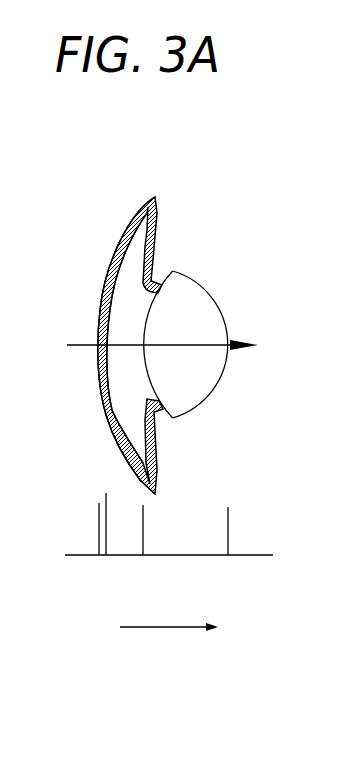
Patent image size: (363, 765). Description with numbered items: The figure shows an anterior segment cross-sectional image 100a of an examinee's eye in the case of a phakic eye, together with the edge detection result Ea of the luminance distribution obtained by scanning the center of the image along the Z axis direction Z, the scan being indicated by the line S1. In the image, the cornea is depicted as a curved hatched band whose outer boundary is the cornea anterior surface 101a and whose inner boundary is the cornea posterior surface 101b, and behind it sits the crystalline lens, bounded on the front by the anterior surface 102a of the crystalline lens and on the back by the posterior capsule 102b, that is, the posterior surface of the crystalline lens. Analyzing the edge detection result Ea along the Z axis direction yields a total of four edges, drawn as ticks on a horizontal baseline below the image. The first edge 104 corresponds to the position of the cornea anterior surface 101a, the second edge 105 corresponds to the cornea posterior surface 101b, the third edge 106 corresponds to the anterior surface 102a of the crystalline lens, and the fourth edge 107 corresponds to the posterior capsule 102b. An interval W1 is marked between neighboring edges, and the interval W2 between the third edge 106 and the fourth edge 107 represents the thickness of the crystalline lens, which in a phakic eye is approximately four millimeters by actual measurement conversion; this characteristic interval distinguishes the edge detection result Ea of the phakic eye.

The anterior segment cross-sectional image 100a is at (177, 198).
The cornea anterior surface 101a is at (120, 247).
The cornea posterior surface 101b is at (110, 278).
The anterior surface of crystalline lens 102a is at (145, 327).
The posterior capsule of crystalline lens 102b is at (224, 324).
The scan line S1 is at (85, 347).
The first edge 104 is at (99, 505).
The second edge 105 is at (106, 493).
The third edge 106 is at (143, 523).
The fourth edge 107 is at (228, 530).
The interval W1 is at (125, 557).
The interval between third edge and fourth edge W2 is at (228, 557).
The edge detection result Ea is at (119, 593).
The Z axis direction Z is at (169, 643).